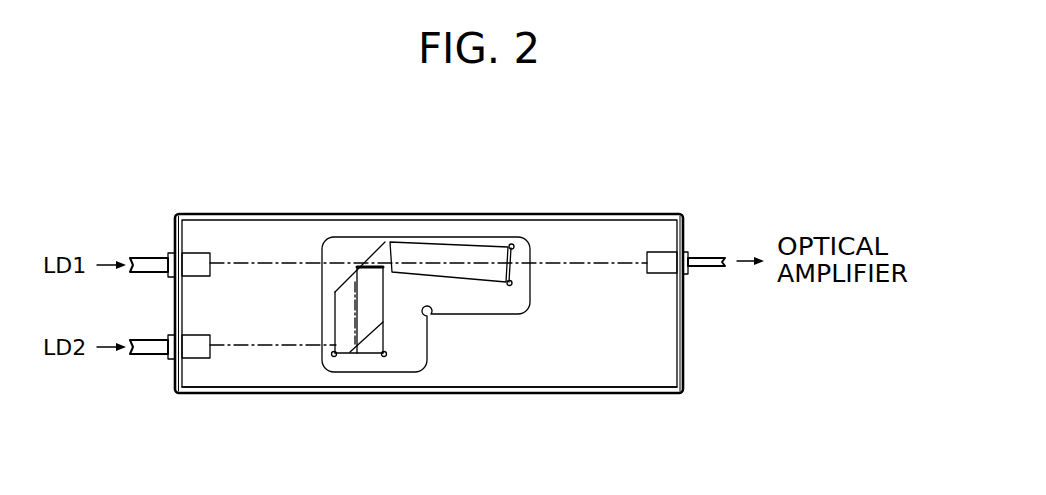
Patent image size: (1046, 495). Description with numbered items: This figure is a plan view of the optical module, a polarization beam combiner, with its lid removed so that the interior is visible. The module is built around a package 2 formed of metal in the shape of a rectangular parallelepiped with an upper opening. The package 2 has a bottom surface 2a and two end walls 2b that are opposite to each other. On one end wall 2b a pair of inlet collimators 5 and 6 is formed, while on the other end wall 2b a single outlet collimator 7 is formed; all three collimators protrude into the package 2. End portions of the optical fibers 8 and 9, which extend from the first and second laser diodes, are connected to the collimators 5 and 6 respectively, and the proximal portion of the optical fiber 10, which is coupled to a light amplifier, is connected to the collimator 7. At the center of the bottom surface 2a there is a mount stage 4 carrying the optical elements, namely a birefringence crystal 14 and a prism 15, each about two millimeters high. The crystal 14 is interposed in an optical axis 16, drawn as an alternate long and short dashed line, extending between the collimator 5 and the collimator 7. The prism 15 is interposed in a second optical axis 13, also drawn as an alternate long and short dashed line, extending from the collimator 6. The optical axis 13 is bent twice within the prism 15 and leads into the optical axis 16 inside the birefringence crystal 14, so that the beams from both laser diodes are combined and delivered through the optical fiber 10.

The package 2 is at (305, 215).
The bottom surface 2a is at (567, 360).
The end walls 2b is at (176, 308).
The mount stage 4 is at (468, 322).
The inlet collimator 5 is at (196, 264).
The inlet collimator 6 is at (195, 350).
The outlet collimator 7 is at (660, 258).
The optical fiber 8 is at (145, 257).
The optical fiber 9 is at (148, 352).
The optical fiber 10 is at (705, 259).
The optical axis 13 is at (273, 348).
The birefringence crystal 14 is at (450, 253).
The prism 15 is at (370, 303).
The optical axis 16 is at (577, 262).